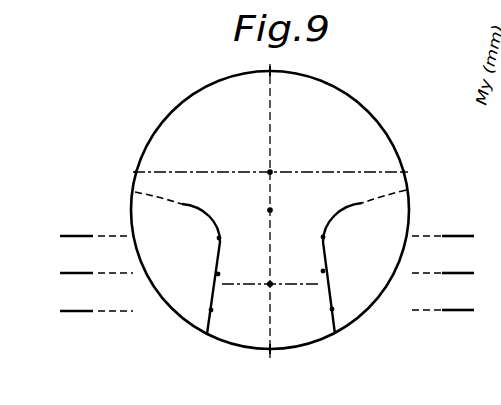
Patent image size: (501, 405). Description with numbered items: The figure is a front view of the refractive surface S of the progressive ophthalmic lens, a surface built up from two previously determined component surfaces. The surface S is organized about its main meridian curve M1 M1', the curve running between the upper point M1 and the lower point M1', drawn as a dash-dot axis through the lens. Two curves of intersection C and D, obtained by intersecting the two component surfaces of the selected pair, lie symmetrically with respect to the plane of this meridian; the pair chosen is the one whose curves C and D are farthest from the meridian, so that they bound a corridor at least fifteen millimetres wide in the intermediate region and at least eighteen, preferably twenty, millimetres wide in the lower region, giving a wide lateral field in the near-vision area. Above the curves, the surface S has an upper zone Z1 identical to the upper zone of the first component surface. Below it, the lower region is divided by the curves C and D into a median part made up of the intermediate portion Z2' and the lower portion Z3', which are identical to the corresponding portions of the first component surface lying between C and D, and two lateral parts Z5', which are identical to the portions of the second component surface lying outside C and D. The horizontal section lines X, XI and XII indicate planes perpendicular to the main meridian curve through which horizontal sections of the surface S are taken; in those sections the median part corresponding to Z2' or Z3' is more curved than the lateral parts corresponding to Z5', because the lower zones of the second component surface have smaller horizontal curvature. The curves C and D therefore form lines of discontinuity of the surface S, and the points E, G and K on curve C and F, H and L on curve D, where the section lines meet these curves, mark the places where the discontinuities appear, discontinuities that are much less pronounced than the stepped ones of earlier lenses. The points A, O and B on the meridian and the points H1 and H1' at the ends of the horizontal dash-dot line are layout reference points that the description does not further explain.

The surface of refraction S is at (175, 109).
The main meridian curve end point M1 is at (286, 64).
The main meridian curve end point M1' is at (272, 361).
The upper zone Z1 is at (353, 128).
The equatorial point right H1 is at (417, 172).
The equatorial point left H1' is at (121, 172).
The center point A is at (272, 174).
The center point O is at (268, 210).
The median part (intermediate portion) Z2' is at (287, 240).
The point B is at (273, 287).
The discontinuity point E is at (216, 238).
The curve of intersection C is at (216, 250).
The discontinuity point G is at (215, 274).
The discontinuity point K is at (208, 309).
The discontinuity point F is at (326, 236).
The curve of intersection D is at (327, 252).
The discontinuity point H is at (326, 271).
The discontinuity point L is at (344, 302).
The lateral part Z5' is at (270, 282).
The median part (lower portion) Z3' is at (334, 346).
The section line X- X is at (75, 239).
The section line XI- XI is at (75, 276).
The section line XII- XII is at (76, 314).